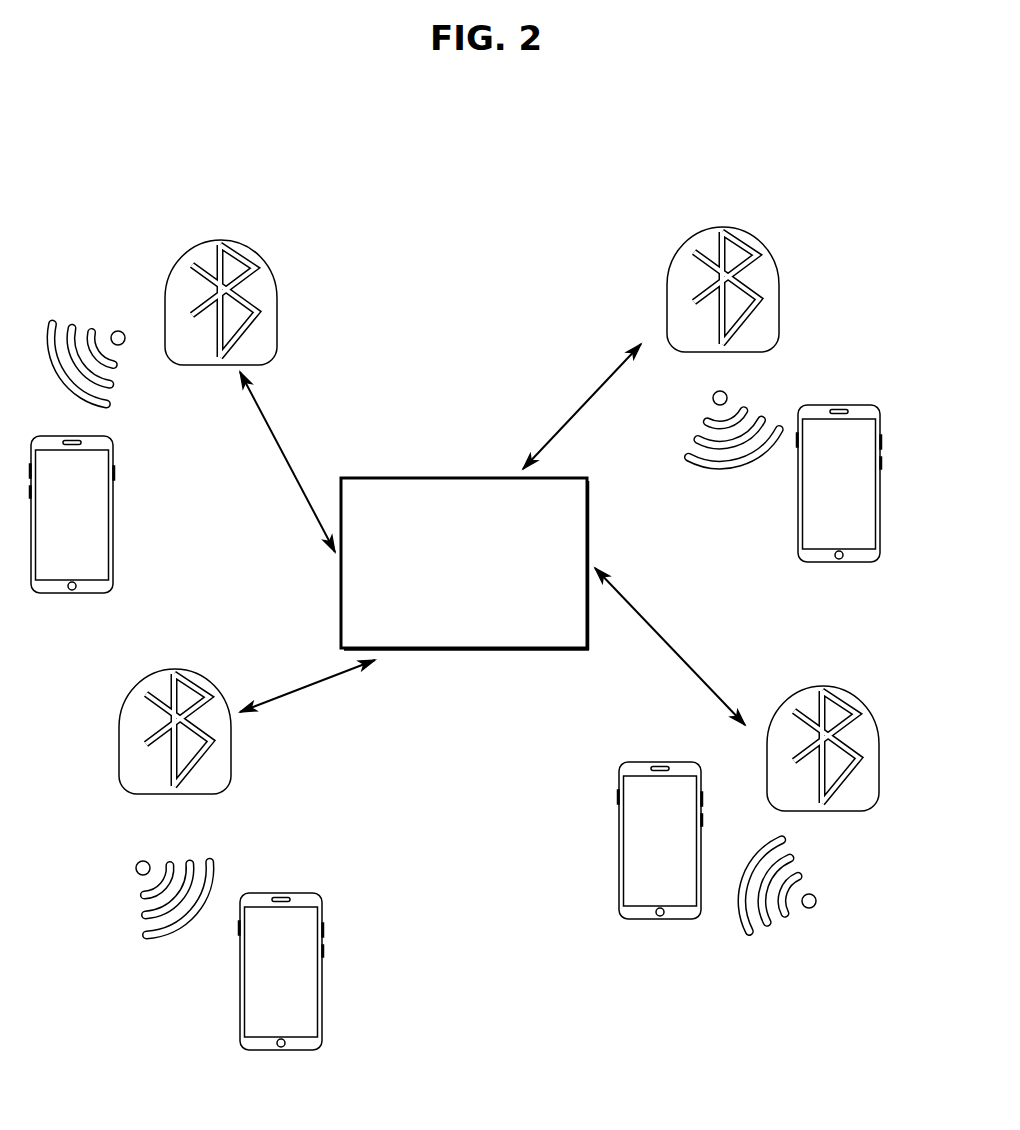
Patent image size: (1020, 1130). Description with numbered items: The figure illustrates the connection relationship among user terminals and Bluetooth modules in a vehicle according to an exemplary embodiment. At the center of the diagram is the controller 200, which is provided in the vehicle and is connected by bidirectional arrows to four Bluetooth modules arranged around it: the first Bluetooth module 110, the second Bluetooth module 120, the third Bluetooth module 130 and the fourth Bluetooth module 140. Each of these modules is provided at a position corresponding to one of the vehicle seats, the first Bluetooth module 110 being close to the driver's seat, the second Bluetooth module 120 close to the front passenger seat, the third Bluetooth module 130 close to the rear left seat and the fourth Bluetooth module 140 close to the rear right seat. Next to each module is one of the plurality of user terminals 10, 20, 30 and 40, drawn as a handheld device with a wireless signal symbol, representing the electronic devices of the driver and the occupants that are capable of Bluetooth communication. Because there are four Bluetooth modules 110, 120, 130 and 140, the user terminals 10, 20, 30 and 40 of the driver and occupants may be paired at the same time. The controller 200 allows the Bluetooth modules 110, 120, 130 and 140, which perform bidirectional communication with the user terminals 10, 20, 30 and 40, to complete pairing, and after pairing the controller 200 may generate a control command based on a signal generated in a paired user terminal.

The user terminal 10 is at (116, 502).
The user terminal 20 is at (882, 472).
The user terminal 30 is at (323, 958).
The user terminal 40 is at (617, 826).
The first Bluetooth module 110 is at (220, 240).
The second Bluetooth module 120 is at (723, 228).
The third Bluetooth module 130 is at (175, 669).
The fourth Bluetooth module 140 is at (825, 688).
The controller 200 is at (360, 478).